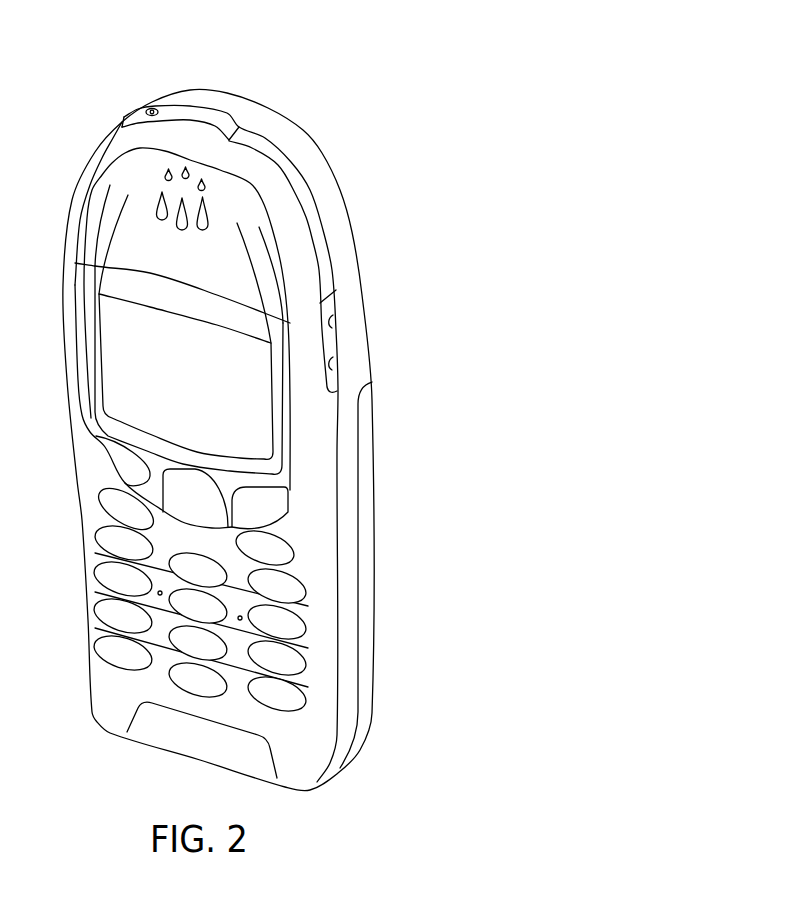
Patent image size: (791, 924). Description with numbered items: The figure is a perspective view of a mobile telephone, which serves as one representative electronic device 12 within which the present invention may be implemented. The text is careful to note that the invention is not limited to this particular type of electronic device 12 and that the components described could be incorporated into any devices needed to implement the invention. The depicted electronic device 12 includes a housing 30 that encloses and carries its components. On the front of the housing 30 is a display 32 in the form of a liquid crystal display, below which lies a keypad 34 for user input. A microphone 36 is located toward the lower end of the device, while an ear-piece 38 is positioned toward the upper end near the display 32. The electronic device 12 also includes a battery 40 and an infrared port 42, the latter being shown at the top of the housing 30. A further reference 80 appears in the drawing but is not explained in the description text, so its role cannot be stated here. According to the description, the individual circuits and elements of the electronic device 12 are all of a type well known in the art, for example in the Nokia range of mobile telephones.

The electronic device 12 is at (318, 97).
The housing 30 is at (352, 233).
The display 32 is at (257, 413).
The keypad 34 is at (276, 700).
The microphone 36 is at (150, 733).
The ear-piece 38 is at (170, 194).
The battery 40 is at (368, 685).
The infrared port 42 is at (203, 118).
The internal antenna 80 is at (373, 562).